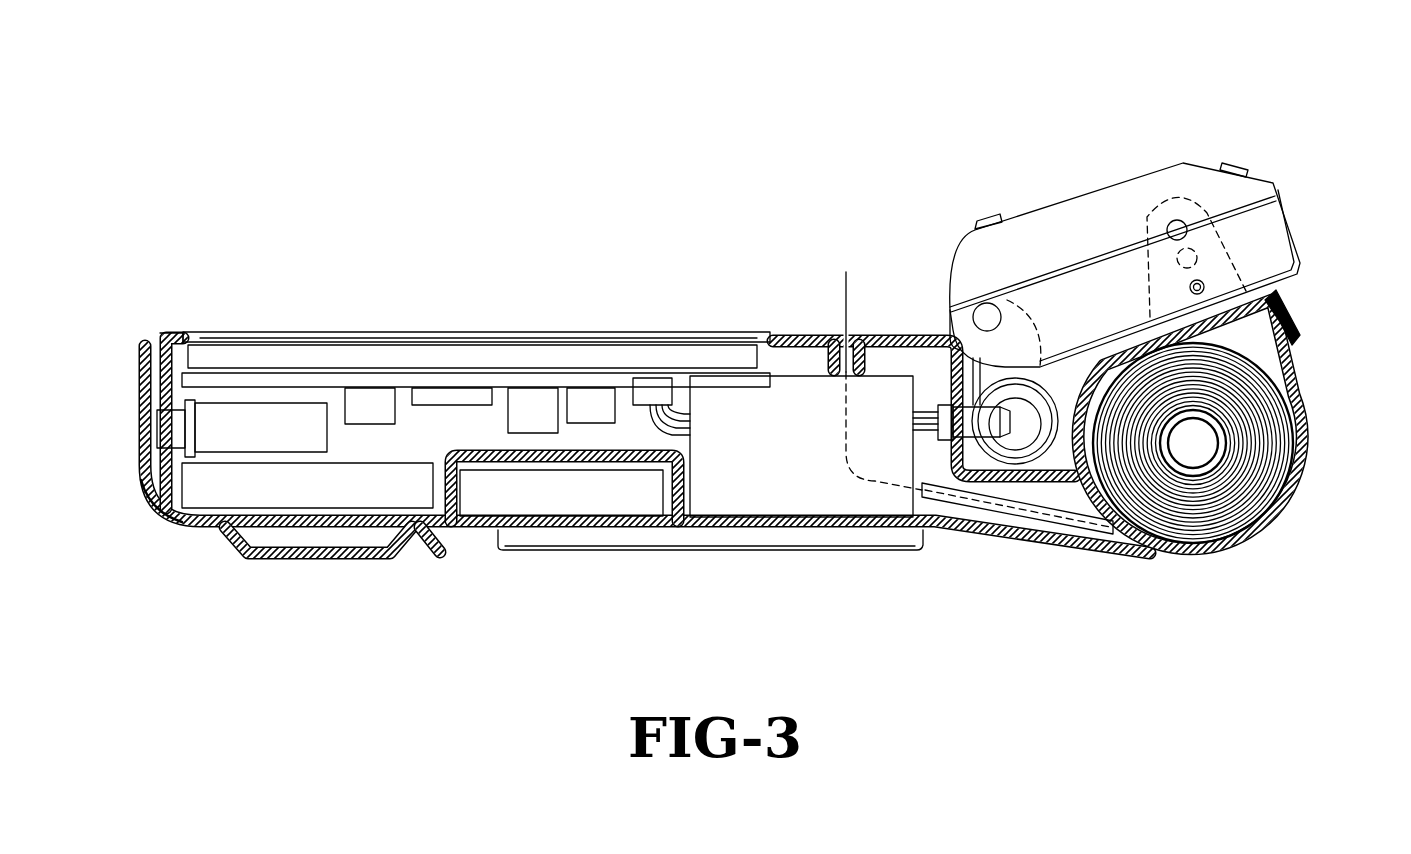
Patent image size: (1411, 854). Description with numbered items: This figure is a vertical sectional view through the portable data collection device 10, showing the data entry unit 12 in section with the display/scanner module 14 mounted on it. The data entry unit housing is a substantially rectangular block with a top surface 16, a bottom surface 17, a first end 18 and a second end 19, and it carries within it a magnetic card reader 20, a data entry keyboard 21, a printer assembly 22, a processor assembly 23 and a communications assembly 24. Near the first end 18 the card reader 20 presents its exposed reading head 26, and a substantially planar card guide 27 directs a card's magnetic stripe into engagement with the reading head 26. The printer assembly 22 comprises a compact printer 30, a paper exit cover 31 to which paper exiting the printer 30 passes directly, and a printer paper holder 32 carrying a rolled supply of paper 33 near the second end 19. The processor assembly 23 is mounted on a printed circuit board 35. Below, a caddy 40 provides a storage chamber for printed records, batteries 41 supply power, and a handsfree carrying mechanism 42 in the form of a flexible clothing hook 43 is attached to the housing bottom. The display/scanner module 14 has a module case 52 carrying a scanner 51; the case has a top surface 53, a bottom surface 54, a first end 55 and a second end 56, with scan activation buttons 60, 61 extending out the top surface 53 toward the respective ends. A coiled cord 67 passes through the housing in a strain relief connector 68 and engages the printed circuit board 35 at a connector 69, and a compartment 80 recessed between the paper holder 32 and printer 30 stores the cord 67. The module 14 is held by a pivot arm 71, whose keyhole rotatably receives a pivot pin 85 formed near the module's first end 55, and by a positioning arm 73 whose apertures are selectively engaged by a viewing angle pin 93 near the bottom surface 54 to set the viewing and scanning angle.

The portable device 10 is at (455, 150).
The data entry unit 12 is at (150, 333).
The display/scanner module 14 is at (1120, 176).
The top surface 16 is at (172, 334).
The bottom surface 17 is at (448, 527).
The first end 18 is at (152, 490).
The second end 19 is at (1302, 328).
The magnetic card reader 20 is at (283, 420).
The data entry keyboard 21 is at (596, 343).
The printer assembly 22 is at (803, 372).
The processor assembly 23 is at (452, 395).
The communications assembly 24 is at (207, 475).
The reading head 26 is at (170, 430).
The card guide 27 is at (142, 373).
The printer 30 is at (818, 485).
The paper exit cover 31 is at (846, 312).
The printer paper holder 32 is at (1118, 553).
The paper 33 is at (1190, 560).
The printed circuit board 35 is at (228, 380).
The caddy 40 is at (680, 551).
The batteries 41 is at (548, 490).
The handsfree carrying mechanism 42 is at (381, 563).
The clothing hook 43 is at (315, 557).
The scanner 51 is at (1300, 246).
The module case 52 is at (1078, 212).
The top surface 53 is at (1183, 160).
The bottom surface 54 is at (1303, 288).
The first end 55 is at (950, 295).
The second end 56 is at (1280, 188).
The scan activation button 60 is at (986, 222).
The scan activation button 61 is at (1238, 168).
The coiled cord 67 is at (1028, 447).
The strain relief connector 68 is at (973, 440).
The connector 69 is at (655, 400).
The pivot arm 71 is at (948, 336).
The positioning arm 73 is at (1220, 243).
The compartment 80 is at (1040, 525).
The pivot pin 85 is at (990, 318).
The viewing angle pin 93 is at (1190, 287).